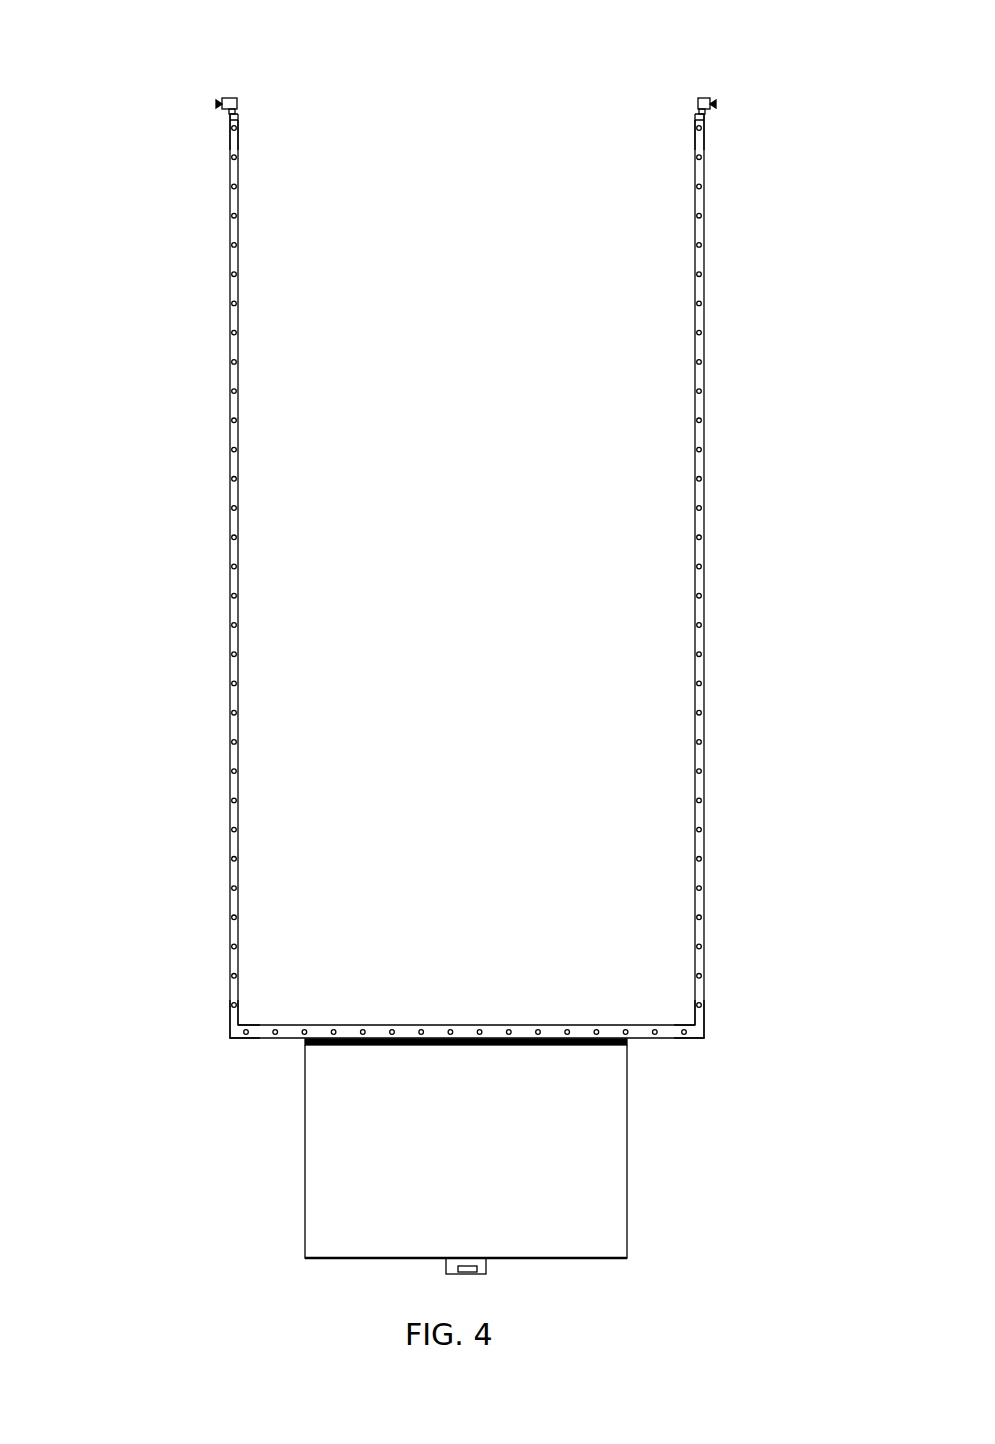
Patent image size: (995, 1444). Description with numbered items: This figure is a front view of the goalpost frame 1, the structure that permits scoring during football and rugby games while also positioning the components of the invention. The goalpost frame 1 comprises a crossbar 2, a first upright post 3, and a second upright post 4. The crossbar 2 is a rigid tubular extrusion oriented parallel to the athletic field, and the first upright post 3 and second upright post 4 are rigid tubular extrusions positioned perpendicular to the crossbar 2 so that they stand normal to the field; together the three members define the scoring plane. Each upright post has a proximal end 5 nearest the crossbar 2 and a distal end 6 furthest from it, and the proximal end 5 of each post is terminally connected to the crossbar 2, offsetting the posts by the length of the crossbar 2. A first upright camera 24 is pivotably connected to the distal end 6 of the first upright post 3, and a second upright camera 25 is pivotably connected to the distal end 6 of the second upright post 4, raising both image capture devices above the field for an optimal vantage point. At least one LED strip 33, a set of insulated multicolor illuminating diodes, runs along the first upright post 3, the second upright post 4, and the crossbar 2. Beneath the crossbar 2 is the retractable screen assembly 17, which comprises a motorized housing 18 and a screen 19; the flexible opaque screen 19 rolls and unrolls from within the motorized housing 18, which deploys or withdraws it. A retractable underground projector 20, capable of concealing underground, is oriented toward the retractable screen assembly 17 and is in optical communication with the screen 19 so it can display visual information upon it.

The goalpost frame 1 is at (122, 529).
The crossbar 2 is at (487, 1028).
The first upright post 3 is at (236, 406).
The second upright post 4 is at (699, 407).
The proximal end 5 is at (219, 965).
The distal end 6 is at (214, 169).
The retractable screen assembly 17 is at (270, 1069).
The motorized housing 18 is at (600, 1046).
The screen 19 is at (483, 1157).
The retractable underground projector 20 is at (478, 1272).
The first upright camera 24 is at (231, 98).
The second upright camera 25 is at (701, 98).
The LED strip 33 is at (237, 626).